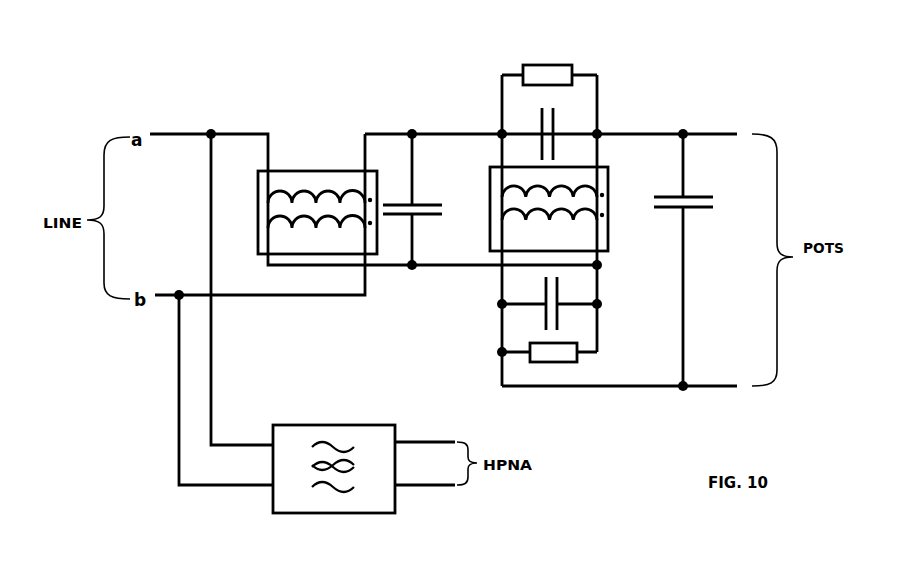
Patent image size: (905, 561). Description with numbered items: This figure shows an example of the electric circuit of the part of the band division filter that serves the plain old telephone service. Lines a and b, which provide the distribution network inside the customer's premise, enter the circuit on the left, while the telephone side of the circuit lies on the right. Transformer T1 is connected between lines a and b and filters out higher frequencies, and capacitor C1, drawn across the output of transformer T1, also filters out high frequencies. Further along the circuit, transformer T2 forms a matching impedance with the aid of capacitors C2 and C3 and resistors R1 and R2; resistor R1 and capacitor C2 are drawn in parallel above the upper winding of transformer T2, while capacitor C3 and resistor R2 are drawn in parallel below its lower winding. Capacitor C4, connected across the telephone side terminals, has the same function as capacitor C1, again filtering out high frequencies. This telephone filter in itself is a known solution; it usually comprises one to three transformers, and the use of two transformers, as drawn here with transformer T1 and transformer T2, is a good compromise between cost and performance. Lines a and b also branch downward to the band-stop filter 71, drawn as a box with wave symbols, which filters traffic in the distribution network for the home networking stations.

The transformer T1 is at (285, 171).
The transformer T2 is at (608, 196).
The capacitor C1 is at (412, 205).
The capacitor C2 is at (553, 130).
The capacitor C3 is at (557, 300).
The capacitor C4 is at (694, 197).
The resistor R1 is at (560, 65).
The resistor R2 is at (560, 362).
The band-stop filter 71 is at (298, 424).